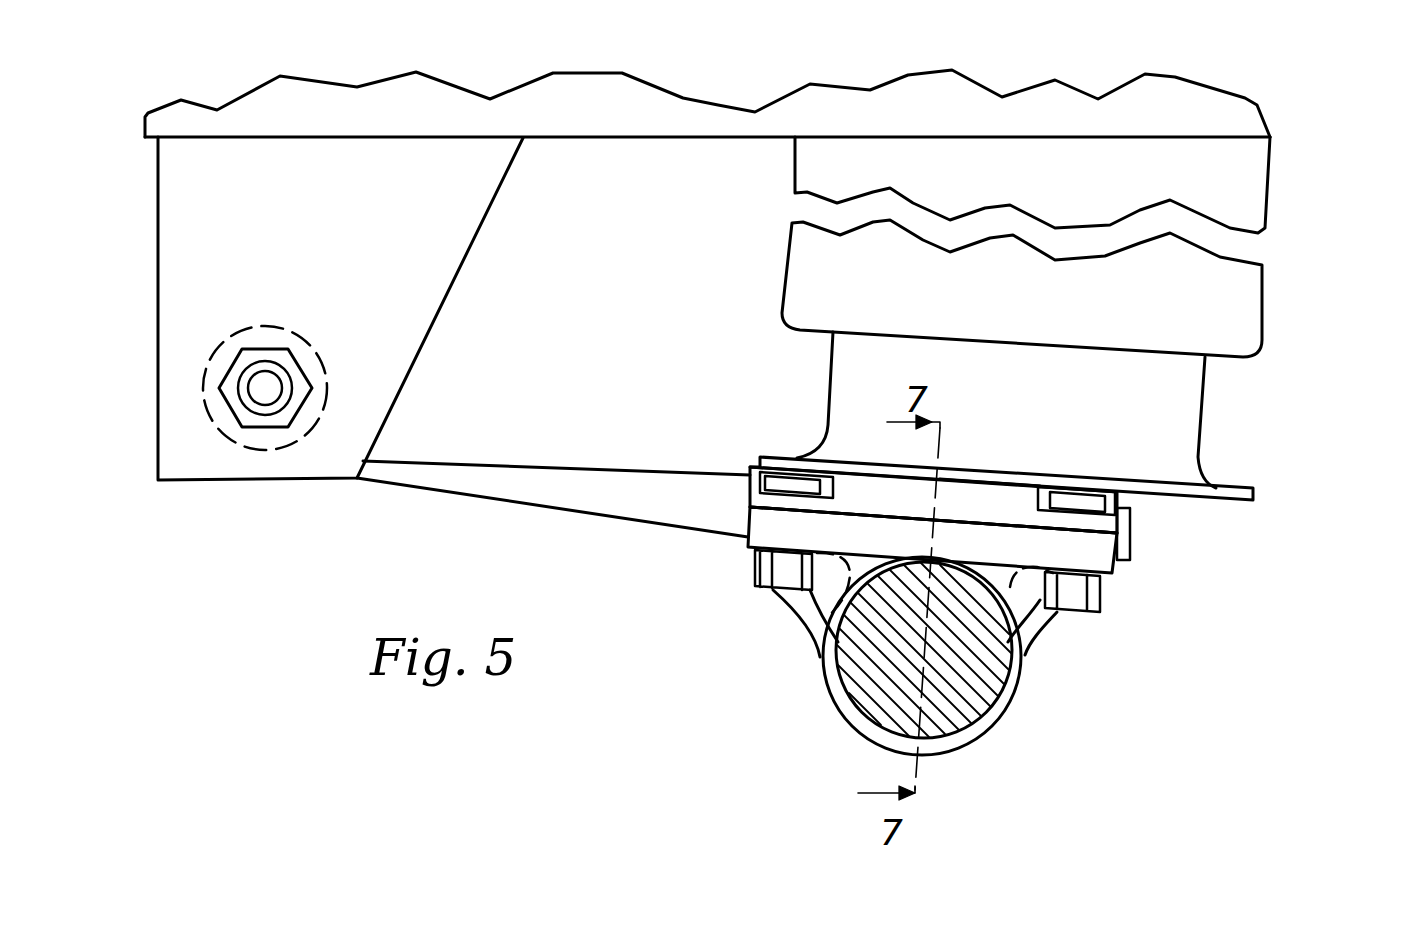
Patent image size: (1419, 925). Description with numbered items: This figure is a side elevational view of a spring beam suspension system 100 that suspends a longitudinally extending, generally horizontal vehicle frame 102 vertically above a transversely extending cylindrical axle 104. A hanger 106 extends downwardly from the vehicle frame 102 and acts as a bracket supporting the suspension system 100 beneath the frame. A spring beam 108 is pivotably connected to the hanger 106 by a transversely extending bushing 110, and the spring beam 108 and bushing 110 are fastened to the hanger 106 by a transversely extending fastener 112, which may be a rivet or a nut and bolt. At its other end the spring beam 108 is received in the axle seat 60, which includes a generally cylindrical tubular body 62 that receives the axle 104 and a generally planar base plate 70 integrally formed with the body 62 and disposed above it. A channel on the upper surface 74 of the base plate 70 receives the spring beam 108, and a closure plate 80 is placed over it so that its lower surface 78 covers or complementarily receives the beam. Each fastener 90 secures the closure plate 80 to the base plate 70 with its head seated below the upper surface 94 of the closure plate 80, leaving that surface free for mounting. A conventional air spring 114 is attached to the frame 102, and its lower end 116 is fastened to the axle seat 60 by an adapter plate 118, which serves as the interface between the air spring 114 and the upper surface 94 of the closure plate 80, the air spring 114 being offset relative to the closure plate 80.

The axle seat 60 is at (1032, 716).
The tubular body 62 is at (846, 720).
The base plate 70 is at (746, 521).
The upper surface 74 is at (905, 512).
The lower surface 78 is at (1005, 528).
The closure plate 80 is at (746, 473).
The fastener 90 is at (756, 578).
The upper surface 94 is at (997, 474).
The spring beam suspension system 100 is at (1340, 190).
The vehicle frame 102 is at (656, 140).
The axle 104 is at (990, 735).
The hanger 106 is at (476, 236).
The spring beam 108 is at (534, 463).
The bushing 110 is at (212, 392).
The fastener 112 is at (232, 338).
The air spring 114 is at (1262, 301).
The lower end 116 is at (1203, 400).
The adapter plate 118 is at (1255, 493).